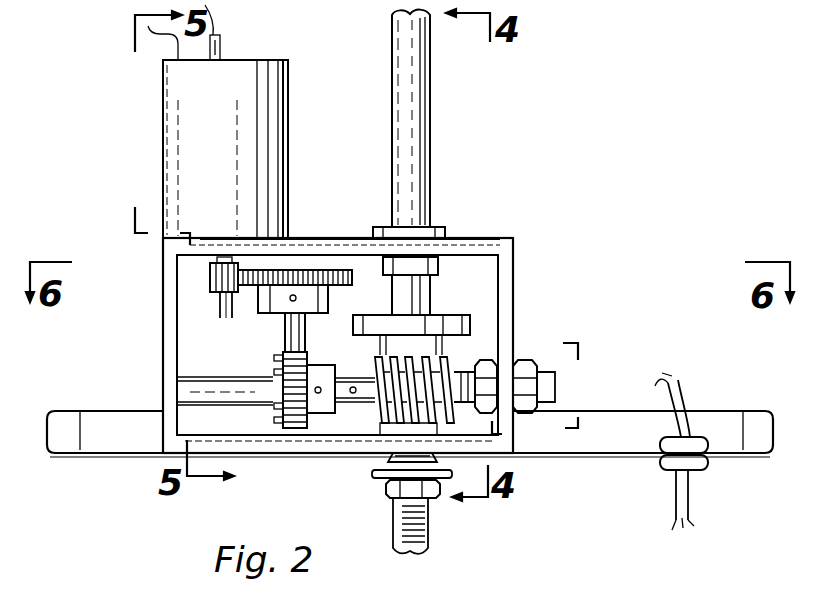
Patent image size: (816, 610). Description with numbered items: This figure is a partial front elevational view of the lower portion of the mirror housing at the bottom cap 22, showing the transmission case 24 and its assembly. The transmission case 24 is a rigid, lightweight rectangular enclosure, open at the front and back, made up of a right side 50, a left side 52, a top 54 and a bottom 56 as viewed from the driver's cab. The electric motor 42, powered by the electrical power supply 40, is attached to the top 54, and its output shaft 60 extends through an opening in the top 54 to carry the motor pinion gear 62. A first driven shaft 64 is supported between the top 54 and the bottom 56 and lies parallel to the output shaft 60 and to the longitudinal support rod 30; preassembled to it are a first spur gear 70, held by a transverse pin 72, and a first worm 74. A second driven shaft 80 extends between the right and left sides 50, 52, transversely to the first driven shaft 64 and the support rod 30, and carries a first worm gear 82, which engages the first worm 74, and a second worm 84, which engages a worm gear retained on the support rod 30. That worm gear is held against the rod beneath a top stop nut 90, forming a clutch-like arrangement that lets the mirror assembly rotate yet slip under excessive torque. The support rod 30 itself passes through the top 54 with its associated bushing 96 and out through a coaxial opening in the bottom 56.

The bottom cap 22 is at (62, 456).
The transmission case 24 is at (148, 309).
The longitudinal support rod 30 is at (430, 46).
The electrical power supply 40 is at (688, 399).
The electric motor 42 is at (215, 159).
The right side 50 is at (513, 266).
The left side 52 is at (161, 353).
The top 54 is at (338, 236).
The bottom 56 is at (276, 433).
The output shaft 60 is at (225, 318).
The motor pinion gear 62 is at (212, 277).
The first driven shaft 64 is at (304, 322).
The first spur gear 70 is at (248, 287).
The transverse pin 72 is at (296, 298).
The first worm 74 is at (278, 368).
The second driven shaft 80 is at (193, 380).
The first worm gear 82 is at (297, 428).
The second worm 84 is at (378, 419).
The top stop nut 90 is at (470, 331).
The bushing 96 is at (440, 226).